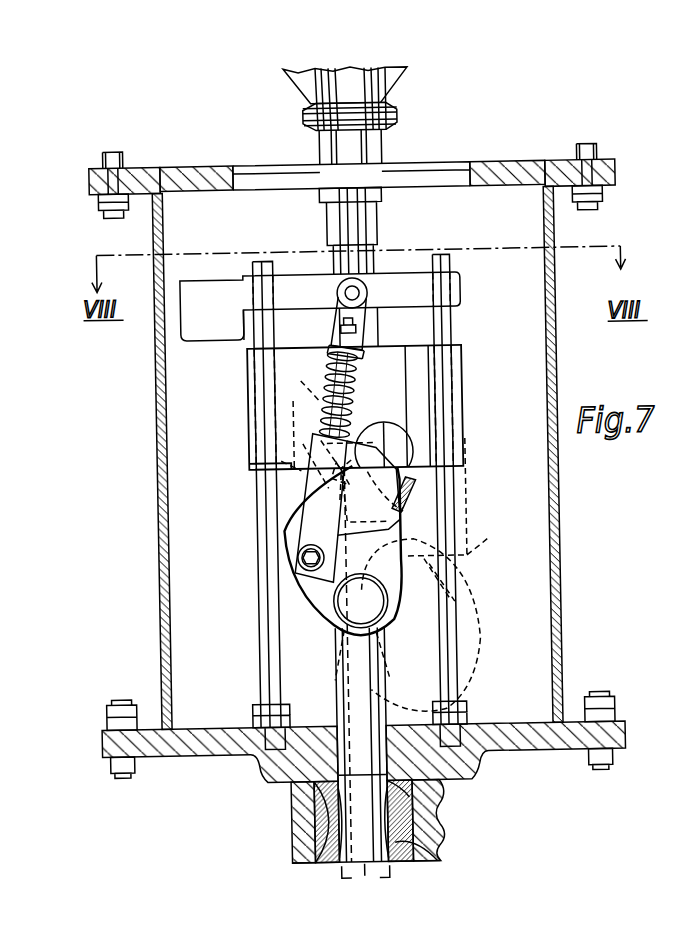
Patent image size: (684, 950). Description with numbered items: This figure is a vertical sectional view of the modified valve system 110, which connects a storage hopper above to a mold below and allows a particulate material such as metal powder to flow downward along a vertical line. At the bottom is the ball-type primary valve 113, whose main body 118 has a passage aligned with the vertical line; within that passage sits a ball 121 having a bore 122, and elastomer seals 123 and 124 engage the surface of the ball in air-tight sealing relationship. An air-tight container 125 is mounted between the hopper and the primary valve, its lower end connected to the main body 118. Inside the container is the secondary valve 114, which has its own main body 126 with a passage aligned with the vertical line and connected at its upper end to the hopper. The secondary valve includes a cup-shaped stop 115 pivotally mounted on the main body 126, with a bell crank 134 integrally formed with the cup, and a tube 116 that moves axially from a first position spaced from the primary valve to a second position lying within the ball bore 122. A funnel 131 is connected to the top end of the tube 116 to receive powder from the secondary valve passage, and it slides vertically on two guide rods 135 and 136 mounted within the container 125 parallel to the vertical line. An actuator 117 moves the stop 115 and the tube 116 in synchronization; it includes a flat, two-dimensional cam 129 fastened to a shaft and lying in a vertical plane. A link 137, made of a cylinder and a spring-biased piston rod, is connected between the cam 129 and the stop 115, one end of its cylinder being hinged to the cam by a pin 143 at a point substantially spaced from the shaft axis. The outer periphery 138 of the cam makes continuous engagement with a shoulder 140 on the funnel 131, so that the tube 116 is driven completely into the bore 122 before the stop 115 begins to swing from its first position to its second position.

The valve system 110 is at (469, 161).
The primary valve 113 is at (434, 829).
The secondary valve 114 is at (368, 329).
The stop 115 is at (262, 420).
The tube 116 is at (370, 665).
The actuator 117 is at (306, 529).
The main body 118 is at (284, 831).
The ball 121 is at (433, 855).
The bore 122 is at (334, 869).
The seal 123 is at (434, 794).
The seal 124 is at (402, 869).
The air-tight container 125 is at (552, 560).
The main body 126 is at (337, 317).
The cam 129 is at (447, 480).
The funnel 131 is at (447, 522).
The bell crank 134 is at (346, 430).
The guide rod 135 is at (266, 624).
The guide rod 136 is at (447, 617).
The link 137 is at (306, 504).
The outer periphery 138 is at (300, 608).
The shoulder 140 is at (253, 474).
The pin 143 is at (299, 557).